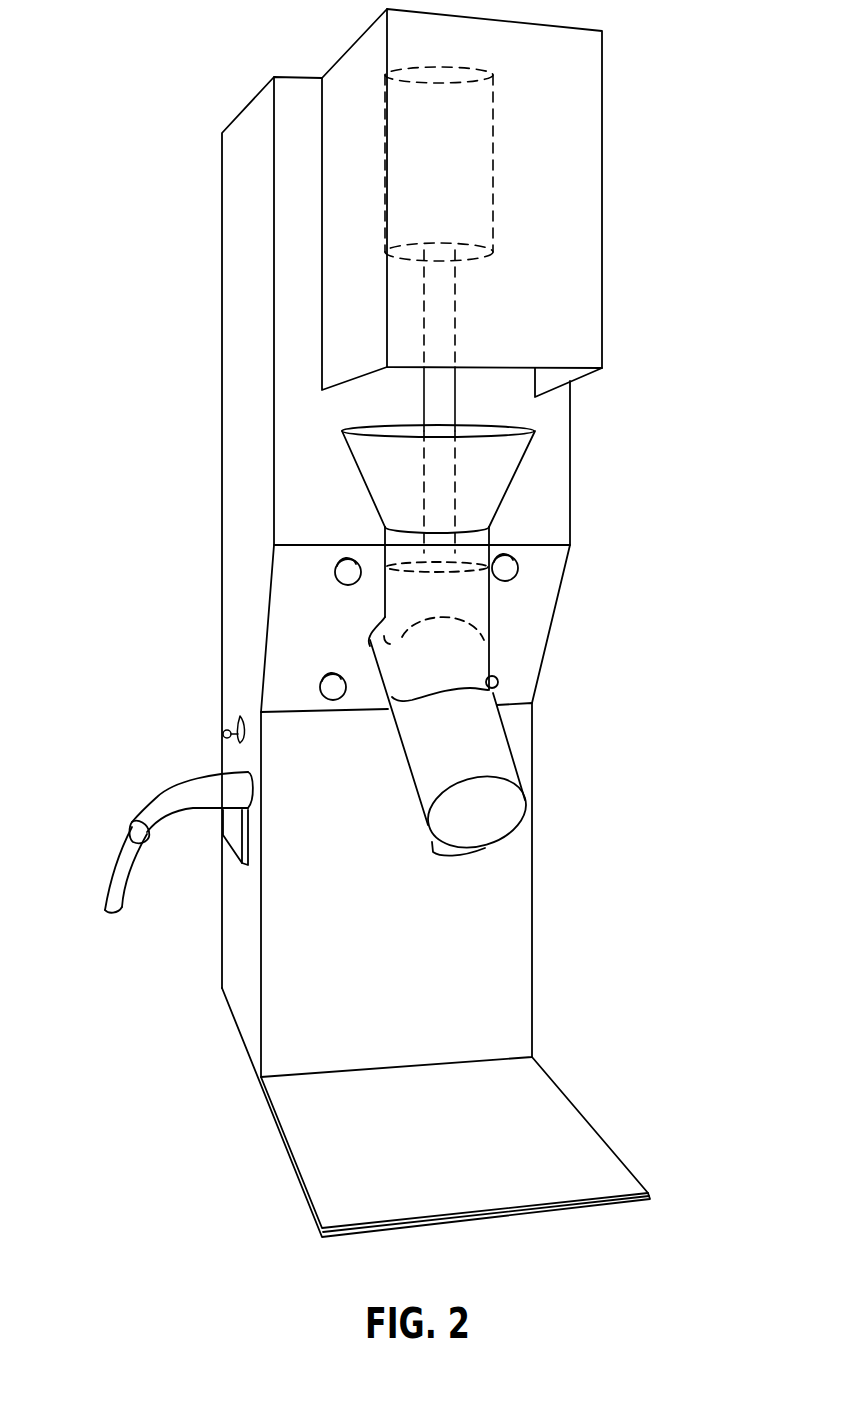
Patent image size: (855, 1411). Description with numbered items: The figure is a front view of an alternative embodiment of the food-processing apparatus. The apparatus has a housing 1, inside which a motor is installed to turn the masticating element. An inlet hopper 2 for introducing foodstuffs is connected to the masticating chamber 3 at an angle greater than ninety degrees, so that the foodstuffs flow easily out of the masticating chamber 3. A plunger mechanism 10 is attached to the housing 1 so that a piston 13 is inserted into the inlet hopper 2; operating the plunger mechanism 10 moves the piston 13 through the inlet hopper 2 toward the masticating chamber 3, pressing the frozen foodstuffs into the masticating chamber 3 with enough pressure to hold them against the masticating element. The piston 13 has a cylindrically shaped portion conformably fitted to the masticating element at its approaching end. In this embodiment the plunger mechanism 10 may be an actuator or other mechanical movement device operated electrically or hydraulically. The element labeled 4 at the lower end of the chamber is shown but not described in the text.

The housing 1 is at (570, 455).
The inlet hopper 2 is at (468, 657).
The masticating chamber 3 is at (490, 742).
The bottom cap of cylinder 4 is at (467, 855).
The plunger mechanism 10 is at (493, 163).
The piston 13 is at (475, 593).